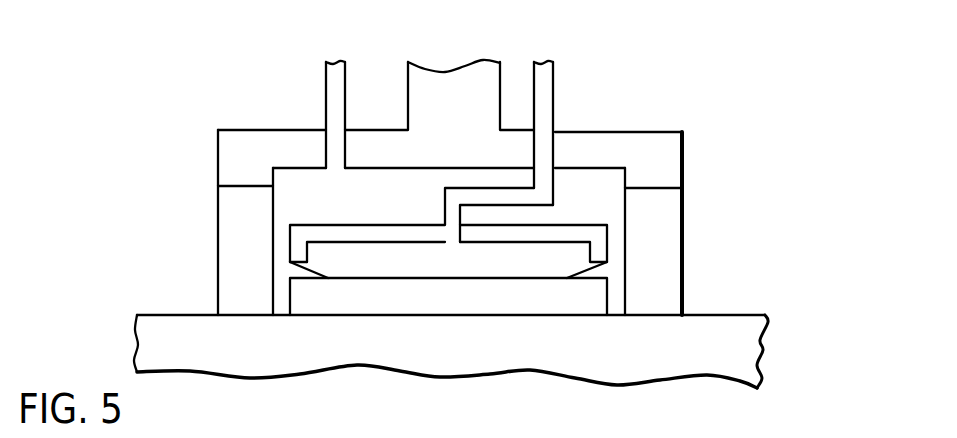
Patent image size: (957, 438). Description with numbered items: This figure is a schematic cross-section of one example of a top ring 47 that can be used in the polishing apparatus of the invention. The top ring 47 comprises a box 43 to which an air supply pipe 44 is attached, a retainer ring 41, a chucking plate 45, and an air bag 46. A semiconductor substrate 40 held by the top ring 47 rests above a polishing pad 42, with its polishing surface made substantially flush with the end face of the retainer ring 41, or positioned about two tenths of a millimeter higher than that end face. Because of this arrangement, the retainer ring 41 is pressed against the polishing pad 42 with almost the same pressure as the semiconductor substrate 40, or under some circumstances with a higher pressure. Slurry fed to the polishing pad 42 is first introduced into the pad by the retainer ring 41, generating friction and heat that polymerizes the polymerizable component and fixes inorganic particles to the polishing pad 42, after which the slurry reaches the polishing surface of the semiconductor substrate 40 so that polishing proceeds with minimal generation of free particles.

The semiconductor substrate 40 is at (480, 302).
The retainer ring 41 is at (663, 237).
The polishing pad 42 is at (747, 350).
The box 43 is at (665, 157).
The air supply pipe 44 is at (337, 77).
The chucking plate 45 is at (345, 223).
The air bag 46 is at (338, 259).
The top ring 47 is at (658, 68).